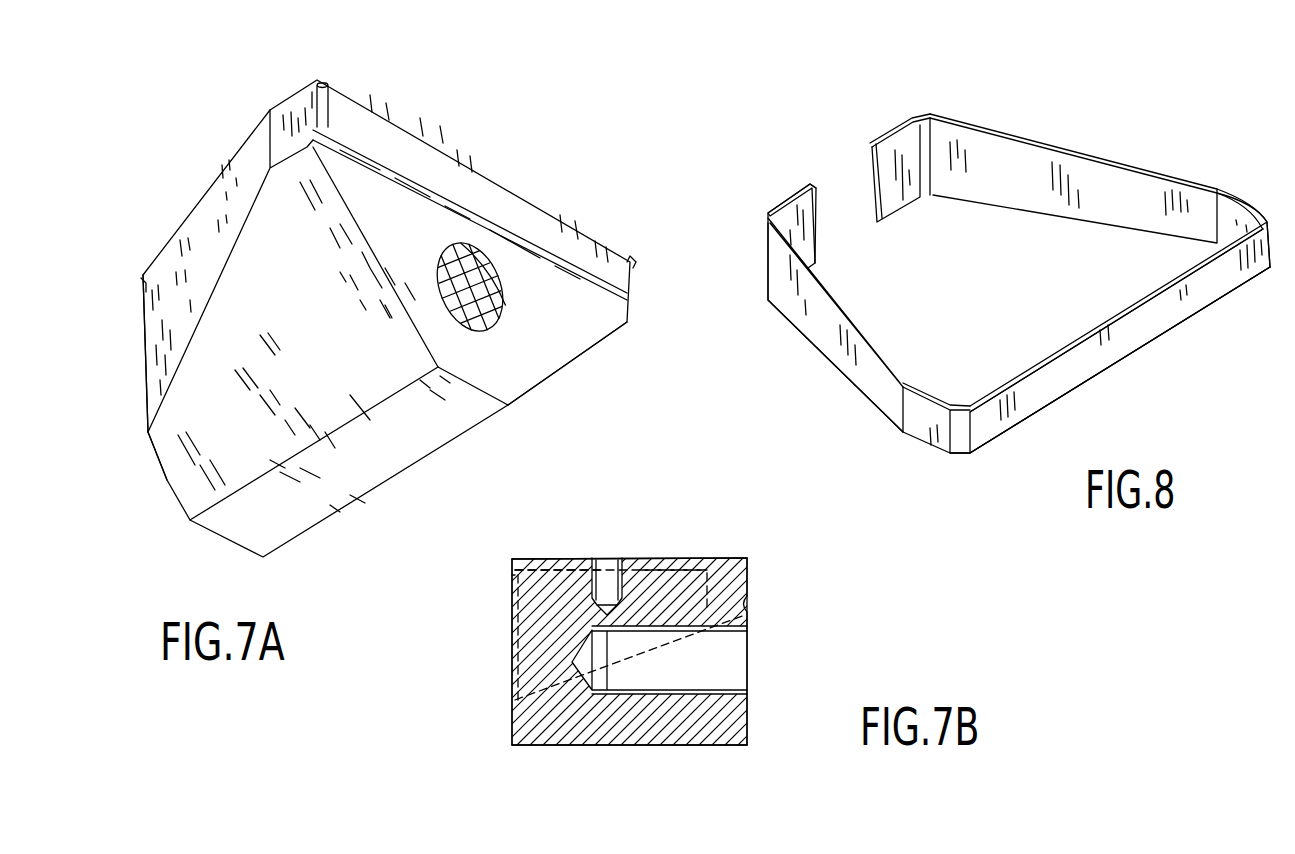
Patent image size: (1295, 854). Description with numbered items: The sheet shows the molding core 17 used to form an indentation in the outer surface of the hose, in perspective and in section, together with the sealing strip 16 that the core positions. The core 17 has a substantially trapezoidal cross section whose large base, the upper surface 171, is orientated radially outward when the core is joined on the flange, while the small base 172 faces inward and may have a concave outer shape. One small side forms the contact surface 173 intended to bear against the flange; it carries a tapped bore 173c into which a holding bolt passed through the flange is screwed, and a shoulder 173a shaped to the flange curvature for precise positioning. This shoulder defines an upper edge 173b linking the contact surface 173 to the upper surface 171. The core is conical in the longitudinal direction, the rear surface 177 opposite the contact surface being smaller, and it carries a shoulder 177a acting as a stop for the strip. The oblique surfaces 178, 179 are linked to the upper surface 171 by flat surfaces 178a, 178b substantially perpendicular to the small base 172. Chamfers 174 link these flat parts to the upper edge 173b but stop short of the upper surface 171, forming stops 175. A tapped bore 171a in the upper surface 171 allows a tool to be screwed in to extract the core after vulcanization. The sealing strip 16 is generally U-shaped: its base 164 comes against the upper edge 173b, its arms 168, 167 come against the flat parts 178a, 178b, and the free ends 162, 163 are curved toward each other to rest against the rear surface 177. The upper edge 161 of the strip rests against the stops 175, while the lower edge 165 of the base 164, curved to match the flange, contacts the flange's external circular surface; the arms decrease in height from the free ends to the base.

In FIG. 8, the sealing strip 16 is at (988, 128).
In FIG. 7A, the core 17 is at (425, 114).
In FIG. 7B, the core 17 is at (504, 663).
In FIG. 8, the upper edge of the strip 161 is at (1068, 150).
In FIG. 8, the free end of the arm 162 is at (792, 203).
In FIG. 8, the free end of the arm 163 is at (893, 157).
In FIG. 8, the base of the sealing strip 164 is at (1142, 318).
In FIG. 8, the lower edge of the base 165 is at (1090, 367).
In FIG. 8, the arm of the sealing strip 167 is at (827, 328).
In FIG. 8, the arm of the sealing strip 168 is at (1148, 200).
In FIG. 7A, the large base (upper surface) 171 is at (227, 170).
In FIG. 7B, the large base (upper surface) 171 is at (668, 557).
In FIG. 7B, the tapped bore 171a is at (610, 570).
In FIG. 7A, the small base 172 is at (370, 463).
In FIG. 7B, the small base 172 is at (608, 745).
In FIG. 7A, the contact surface 173 is at (508, 368).
In FIG. 7B, the contact surface 173 is at (750, 712).
In FIG. 7A, the shoulder 173a is at (598, 288).
In FIG. 7B, the shoulder 173a is at (750, 598).
In FIG. 7A, the upper edge 173b is at (457, 157).
In FIG. 7B, the upper edge 173b is at (750, 580).
In FIG. 7A, the tapped bore 173c is at (493, 270).
In FIG. 7B, the tapped bore 173c is at (722, 630).
In FIG. 7A, the chamfer 174 is at (317, 105).
In FIG. 7A, the stop 175 is at (320, 82).
In FIG. 7A, the rear surface 177 is at (145, 338).
In FIG. 7B, the rear surface 177 is at (510, 620).
In FIG. 7A, the shoulder of the rear surface 177a is at (142, 293).
In FIG. 7B, the shoulder of the rear surface 177a is at (510, 580).
In FIG. 7A, the oblique surface 178 is at (177, 447).
In FIG. 7A, the flat surface 178a is at (203, 233).
In FIG. 7B, the flat surface 178a is at (553, 558).
In FIG. 7A, the flat surface 178b is at (287, 120).
In FIG. 7B, the flat surface 178b is at (740, 557).
In FIG. 7A, the oblique surface 179 is at (567, 368).